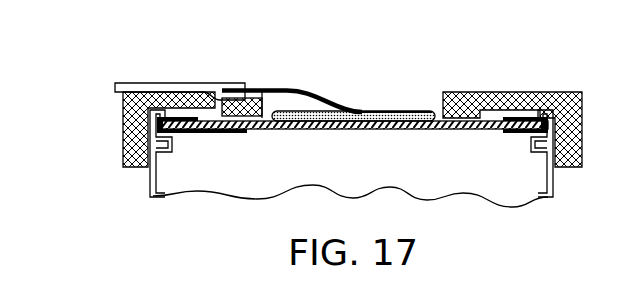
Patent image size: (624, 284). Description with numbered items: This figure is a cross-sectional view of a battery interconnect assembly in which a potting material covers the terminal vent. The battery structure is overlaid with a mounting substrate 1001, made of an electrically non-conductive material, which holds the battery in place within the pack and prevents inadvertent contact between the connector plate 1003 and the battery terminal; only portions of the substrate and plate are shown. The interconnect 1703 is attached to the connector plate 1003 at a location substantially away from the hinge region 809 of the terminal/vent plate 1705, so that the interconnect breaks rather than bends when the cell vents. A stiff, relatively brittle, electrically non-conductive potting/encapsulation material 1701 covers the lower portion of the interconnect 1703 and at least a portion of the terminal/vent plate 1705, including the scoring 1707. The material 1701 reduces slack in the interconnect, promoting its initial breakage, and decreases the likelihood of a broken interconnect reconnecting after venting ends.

The mounting substrate 1001 is at (122, 109).
The connector plate 1003 is at (148, 88).
The interconnect 1703 is at (287, 87).
The potting/encapsulation material 1701 is at (405, 110).
The hinge region 809 is at (405, 138).
The terminal/vent plate 1705 is at (237, 132).
The scoring 1707 is at (292, 138).